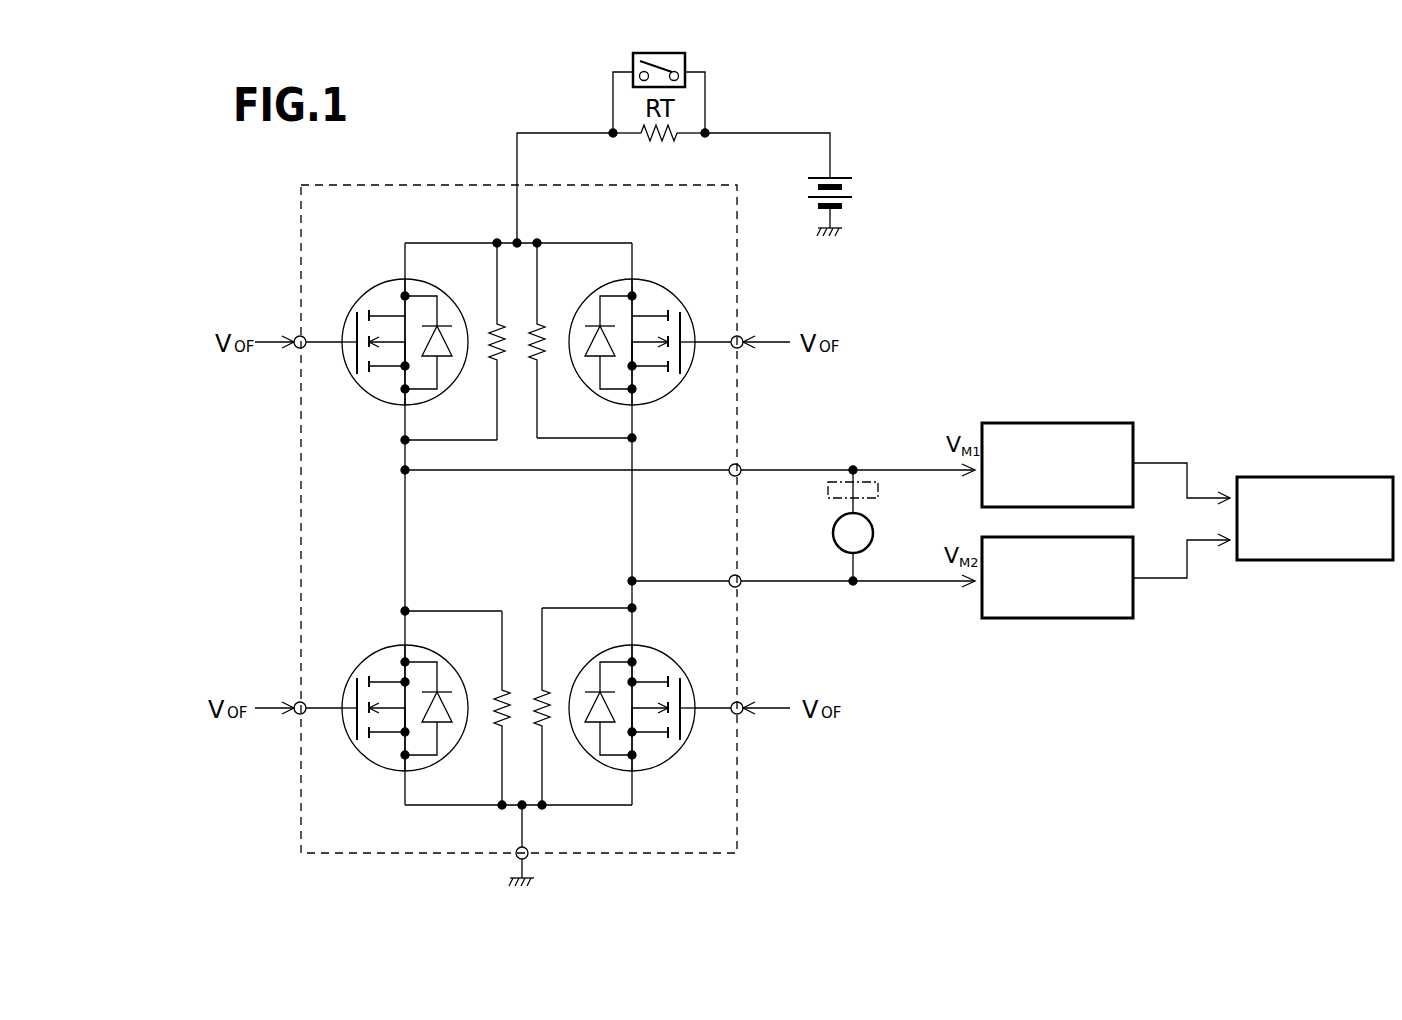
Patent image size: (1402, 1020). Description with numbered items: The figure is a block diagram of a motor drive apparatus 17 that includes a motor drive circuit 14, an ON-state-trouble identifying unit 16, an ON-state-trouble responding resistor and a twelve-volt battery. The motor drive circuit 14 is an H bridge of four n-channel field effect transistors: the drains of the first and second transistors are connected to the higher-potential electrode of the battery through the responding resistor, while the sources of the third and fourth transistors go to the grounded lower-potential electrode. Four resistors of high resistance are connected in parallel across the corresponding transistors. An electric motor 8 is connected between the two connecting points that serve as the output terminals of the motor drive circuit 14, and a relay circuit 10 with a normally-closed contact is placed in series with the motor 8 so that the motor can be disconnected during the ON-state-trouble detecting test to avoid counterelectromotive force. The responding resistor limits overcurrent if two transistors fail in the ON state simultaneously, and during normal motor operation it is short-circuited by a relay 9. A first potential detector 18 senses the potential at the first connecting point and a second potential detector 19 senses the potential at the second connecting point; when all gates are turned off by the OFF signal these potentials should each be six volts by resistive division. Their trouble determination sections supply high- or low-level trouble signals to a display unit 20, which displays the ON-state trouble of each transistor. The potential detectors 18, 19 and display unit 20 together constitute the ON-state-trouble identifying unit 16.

The electric motor 8 is at (873, 533).
The relay 9 is at (683, 54).
The relay circuit 10 is at (828, 490).
The motor drive circuit 14 is at (737, 791).
The ON-state-trouble identifying unit 16 is at (1080, 313).
The motor drive apparatus 17 is at (852, 108).
The first potential detector 18 is at (1050, 423).
The second potential detector 19 is at (1058, 618).
The display unit 20 is at (1310, 477).